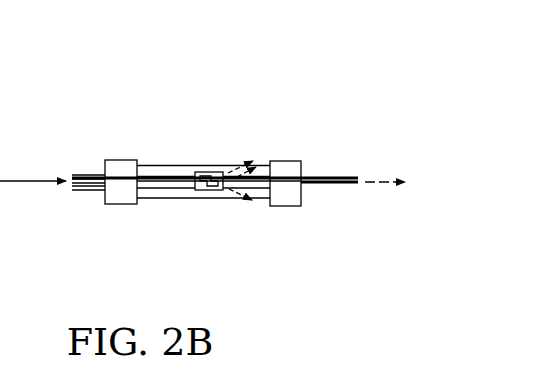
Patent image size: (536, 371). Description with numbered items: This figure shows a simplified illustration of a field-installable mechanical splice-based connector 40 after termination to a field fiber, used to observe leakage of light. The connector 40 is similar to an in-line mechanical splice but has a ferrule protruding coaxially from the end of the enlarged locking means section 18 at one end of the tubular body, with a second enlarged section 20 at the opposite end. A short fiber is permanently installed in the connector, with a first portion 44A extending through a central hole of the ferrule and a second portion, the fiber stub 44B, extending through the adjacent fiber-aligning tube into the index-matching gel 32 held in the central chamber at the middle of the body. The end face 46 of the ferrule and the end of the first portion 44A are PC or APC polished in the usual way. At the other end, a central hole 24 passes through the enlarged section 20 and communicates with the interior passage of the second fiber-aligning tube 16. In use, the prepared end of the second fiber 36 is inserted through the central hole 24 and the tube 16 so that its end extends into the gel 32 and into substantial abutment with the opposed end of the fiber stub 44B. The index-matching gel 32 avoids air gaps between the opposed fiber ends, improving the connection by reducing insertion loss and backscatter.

The mechanical splice-based connector 40 is at (219, 79).
The end face 46 is at (72, 180).
The enlarged locking means section 18 is at (113, 160).
The enlarged section 20 is at (288, 161).
The first portion 44A is at (72, 190).
The fiber stub 44B is at (151, 186).
The index-matching gel 32 is at (215, 190).
The fiber-aligning tube 16 is at (268, 190).
The central hole 24 is at (286, 182).
The second fiber 36 is at (347, 185).